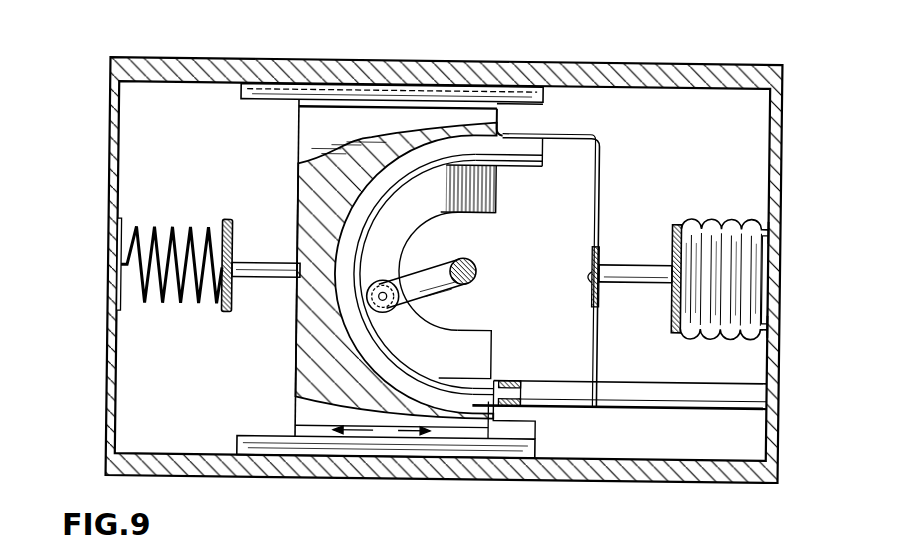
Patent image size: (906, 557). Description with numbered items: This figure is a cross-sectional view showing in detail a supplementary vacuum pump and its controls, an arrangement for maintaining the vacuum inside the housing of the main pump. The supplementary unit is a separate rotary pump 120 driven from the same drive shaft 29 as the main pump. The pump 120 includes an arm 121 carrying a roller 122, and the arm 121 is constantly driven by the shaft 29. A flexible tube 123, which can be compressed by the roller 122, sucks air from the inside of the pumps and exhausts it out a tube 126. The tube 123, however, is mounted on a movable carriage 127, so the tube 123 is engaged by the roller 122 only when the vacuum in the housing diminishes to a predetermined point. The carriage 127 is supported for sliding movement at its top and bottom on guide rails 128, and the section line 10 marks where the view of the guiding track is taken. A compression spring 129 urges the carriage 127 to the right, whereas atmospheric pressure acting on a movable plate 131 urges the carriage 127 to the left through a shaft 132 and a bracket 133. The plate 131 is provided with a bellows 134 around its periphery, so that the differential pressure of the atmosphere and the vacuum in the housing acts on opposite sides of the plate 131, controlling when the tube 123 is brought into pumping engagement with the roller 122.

The section line indicator 10 is at (231, 50).
The rotary pump 120 is at (585, 62).
The guide rails 128 is at (279, 93).
The movable carriage 127 is at (296, 352).
The flexible tube 123 is at (393, 182).
The drive shaft 29 is at (478, 278).
The arm 121 is at (452, 290).
The roller 122 is at (391, 314).
The compression spring 129 is at (170, 230).
The bracket 133 is at (597, 236).
The shaft 132 is at (621, 281).
The movable plate 131 is at (686, 318).
The bellows 134 is at (729, 222).
The exhaust tube 126 is at (746, 400).